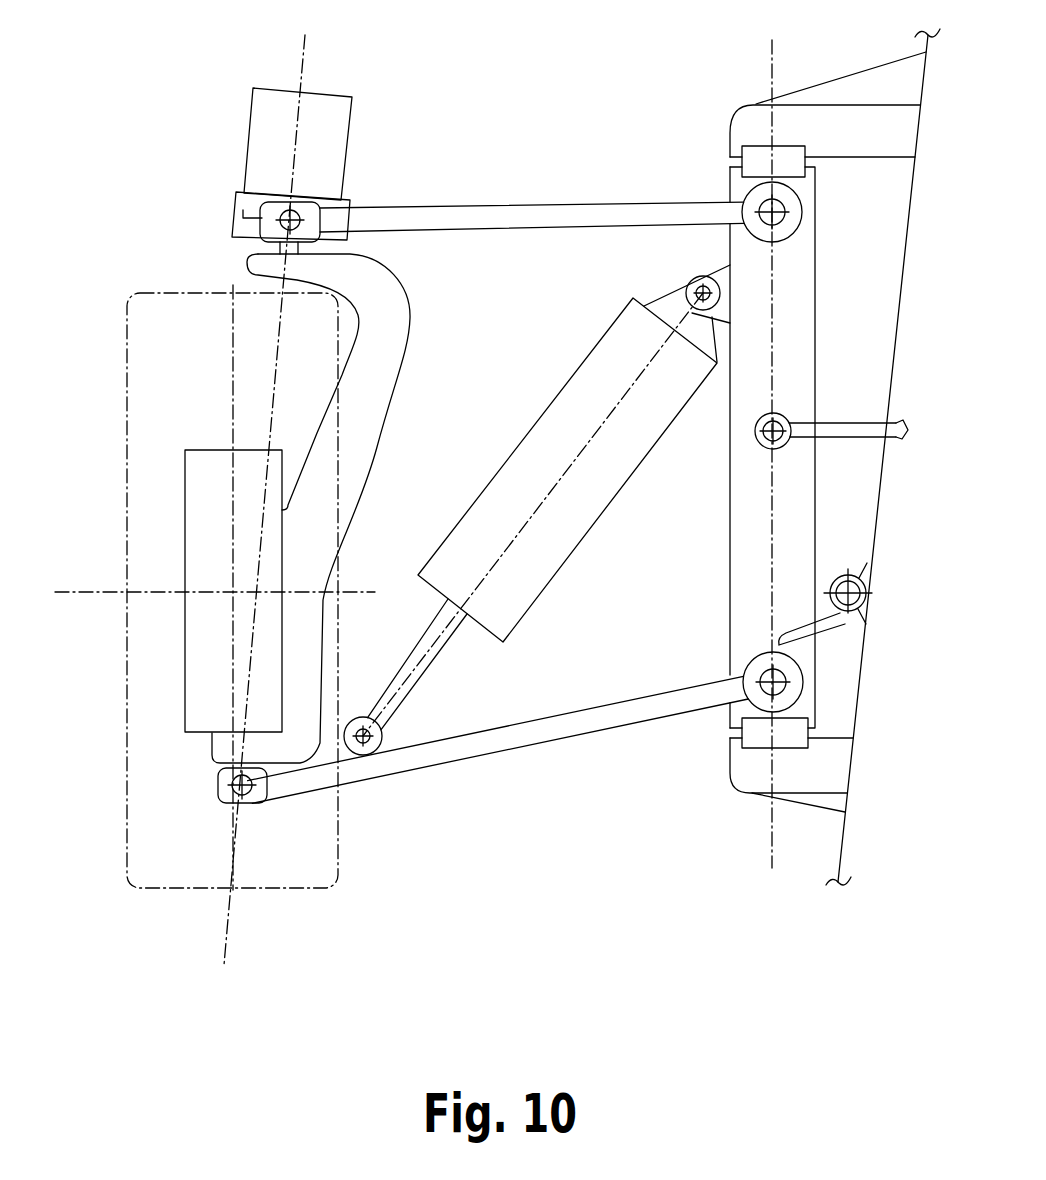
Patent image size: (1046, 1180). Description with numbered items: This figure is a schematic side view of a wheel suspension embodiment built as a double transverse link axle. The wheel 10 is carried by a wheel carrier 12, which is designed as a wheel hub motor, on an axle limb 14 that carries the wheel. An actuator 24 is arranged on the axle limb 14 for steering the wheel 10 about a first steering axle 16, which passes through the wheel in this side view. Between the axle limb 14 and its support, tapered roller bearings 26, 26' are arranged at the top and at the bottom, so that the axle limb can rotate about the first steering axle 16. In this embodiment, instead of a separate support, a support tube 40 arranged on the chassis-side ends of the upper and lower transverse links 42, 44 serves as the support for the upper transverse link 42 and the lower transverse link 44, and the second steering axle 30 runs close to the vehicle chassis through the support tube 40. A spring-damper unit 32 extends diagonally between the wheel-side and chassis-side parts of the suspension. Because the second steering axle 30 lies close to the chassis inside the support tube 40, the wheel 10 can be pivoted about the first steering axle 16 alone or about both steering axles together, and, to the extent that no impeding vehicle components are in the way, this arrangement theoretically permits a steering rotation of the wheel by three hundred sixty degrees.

The wheel 10 is at (150, 293).
The wheel carrier 12 is at (203, 505).
The axle limb 14 is at (386, 316).
The first steering axle 16 is at (303, 45).
The actuator 24 is at (263, 143).
The tapered roller bearing 26 is at (252, 243).
The tapered roller bearing 26' is at (172, 777).
The second steering axle 30 is at (770, 58).
The spring-damper unit 32 is at (598, 490).
The support tube 40 is at (792, 287).
The upper transverse link 42 is at (537, 216).
The lower transverse link 44 is at (573, 727).